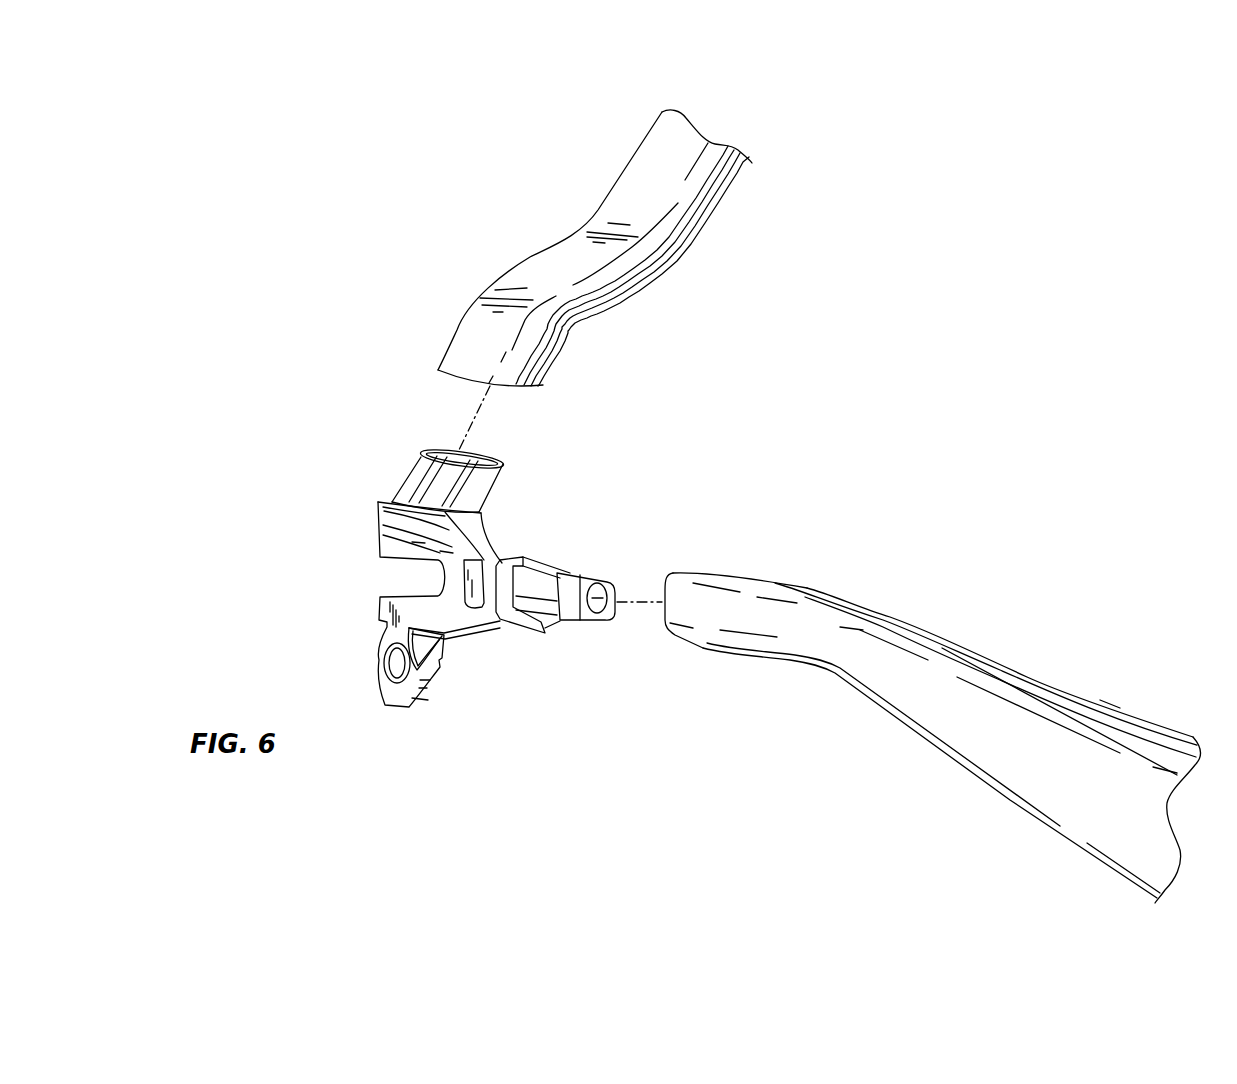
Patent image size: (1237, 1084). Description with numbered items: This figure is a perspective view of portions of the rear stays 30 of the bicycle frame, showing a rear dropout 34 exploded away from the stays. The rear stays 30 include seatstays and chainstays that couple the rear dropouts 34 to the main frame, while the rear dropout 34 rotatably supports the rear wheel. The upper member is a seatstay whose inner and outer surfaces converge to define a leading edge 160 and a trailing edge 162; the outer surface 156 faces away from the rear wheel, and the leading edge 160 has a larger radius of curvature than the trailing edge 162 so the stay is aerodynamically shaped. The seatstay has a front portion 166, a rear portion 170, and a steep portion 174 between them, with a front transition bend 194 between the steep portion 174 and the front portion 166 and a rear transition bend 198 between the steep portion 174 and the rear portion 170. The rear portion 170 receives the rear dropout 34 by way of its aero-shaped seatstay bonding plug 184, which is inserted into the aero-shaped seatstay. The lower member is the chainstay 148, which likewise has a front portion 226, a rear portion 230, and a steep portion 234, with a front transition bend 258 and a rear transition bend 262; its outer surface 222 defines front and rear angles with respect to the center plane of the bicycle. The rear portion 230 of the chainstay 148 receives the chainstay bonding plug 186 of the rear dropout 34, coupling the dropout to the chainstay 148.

The rear stays 30 is at (431, 182).
The right chainstay 148 is at (678, 152).
The trailing edge 162 is at (598, 215).
The steep portion 174 is at (538, 278).
The rear transition bend 198 is at (478, 300).
The rear portion 170 is at (467, 364).
The front portion 166 is at (747, 165).
The outer surface 156 is at (680, 203).
The front transition bend 194 is at (692, 247).
The leading edge 160 is at (632, 264).
The seatstay bonding plug 184 is at (478, 482).
The chainstay bonding plug 186 is at (569, 605).
The rear dropout 34 is at (435, 676).
The rear portion 230 is at (690, 580).
The rear transition bend 262 is at (807, 590).
The front transition bend 258 is at (945, 640).
The steep portion 234 is at (810, 648).
The outer surface 222 is at (987, 757).
The front portion 226 is at (1117, 855).